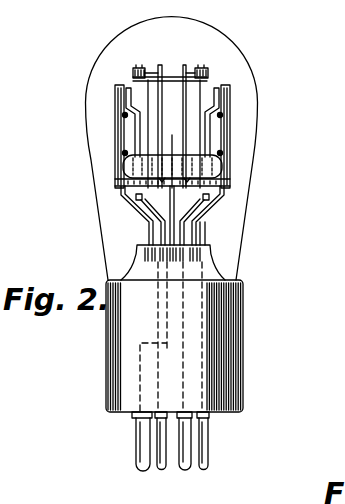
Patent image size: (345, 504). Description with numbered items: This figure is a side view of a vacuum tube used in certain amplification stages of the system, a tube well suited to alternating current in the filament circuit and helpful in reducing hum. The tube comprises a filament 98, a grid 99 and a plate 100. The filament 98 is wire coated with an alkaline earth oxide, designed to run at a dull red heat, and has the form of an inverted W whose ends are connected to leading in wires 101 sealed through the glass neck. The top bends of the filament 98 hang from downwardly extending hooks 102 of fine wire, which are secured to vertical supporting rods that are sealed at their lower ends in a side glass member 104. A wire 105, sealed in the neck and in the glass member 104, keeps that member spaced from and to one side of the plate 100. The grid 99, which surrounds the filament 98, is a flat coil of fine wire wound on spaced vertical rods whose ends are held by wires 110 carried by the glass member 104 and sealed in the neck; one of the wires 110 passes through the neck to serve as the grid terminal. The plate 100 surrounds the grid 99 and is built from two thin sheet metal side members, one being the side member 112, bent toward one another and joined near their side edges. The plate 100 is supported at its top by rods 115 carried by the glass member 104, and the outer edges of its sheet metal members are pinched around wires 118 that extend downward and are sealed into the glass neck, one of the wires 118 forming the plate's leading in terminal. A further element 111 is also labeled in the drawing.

The filament 98 is at (208, 197).
The grid 99 is at (188, 67).
The plate 100 is at (232, 122).
The leading in wires 101 is at (208, 230).
The hooks 102 is at (167, 73).
The glass member 104 is at (222, 168).
The wire 105 is at (208, 240).
The wires 110 is at (212, 80).
The lead wire 111 is at (212, 198).
The sheet metal side member 112 is at (228, 100).
The rods 115 is at (212, 142).
The wires 118 is at (120, 191).